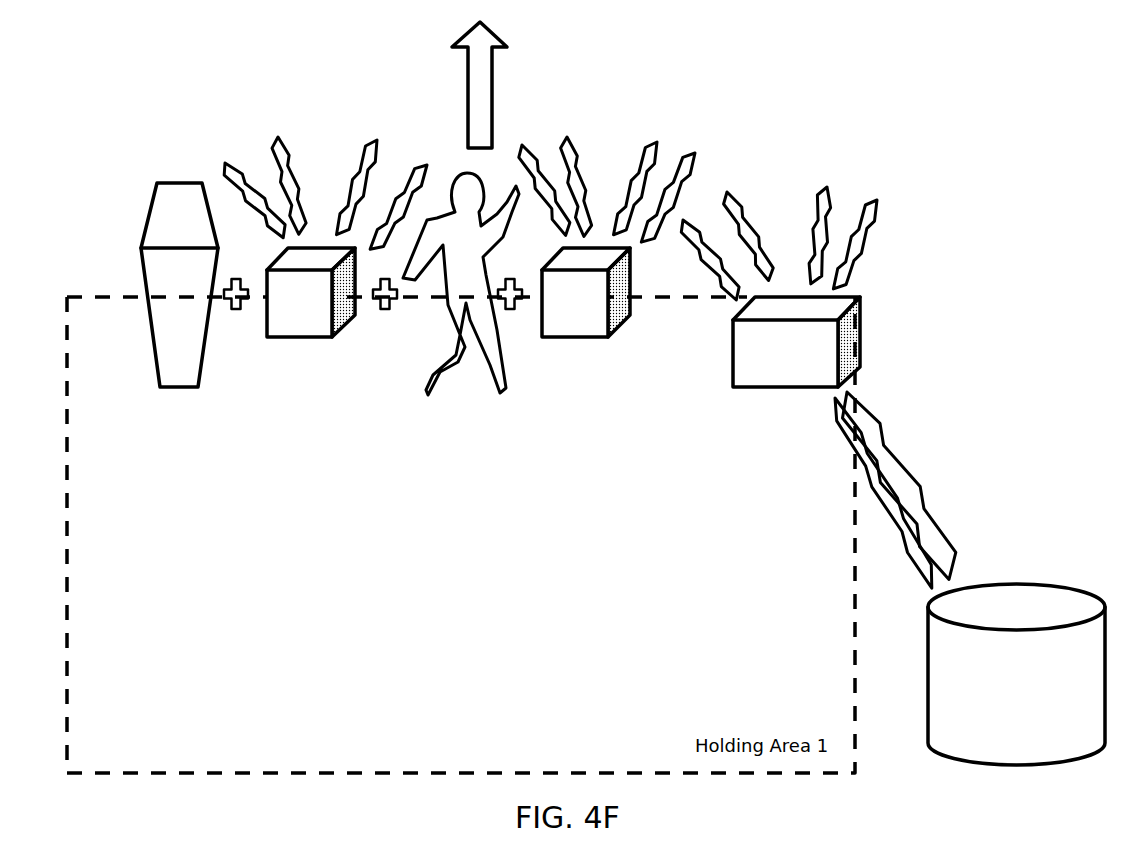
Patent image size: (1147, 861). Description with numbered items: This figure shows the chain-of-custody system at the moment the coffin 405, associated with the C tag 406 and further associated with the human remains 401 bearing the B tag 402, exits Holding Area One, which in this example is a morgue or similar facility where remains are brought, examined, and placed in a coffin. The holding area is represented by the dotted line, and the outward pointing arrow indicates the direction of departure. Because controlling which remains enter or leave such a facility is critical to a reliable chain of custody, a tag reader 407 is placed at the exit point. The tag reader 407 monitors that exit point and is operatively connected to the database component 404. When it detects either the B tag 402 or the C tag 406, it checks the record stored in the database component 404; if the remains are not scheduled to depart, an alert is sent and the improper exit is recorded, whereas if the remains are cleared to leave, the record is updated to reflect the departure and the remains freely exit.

The human remains 401 is at (478, 397).
The B tag 402 is at (618, 168).
The database component 404 is at (1010, 581).
The coffin 405 is at (180, 385).
The C tag 406 is at (318, 170).
The tag reader 407 is at (862, 330).